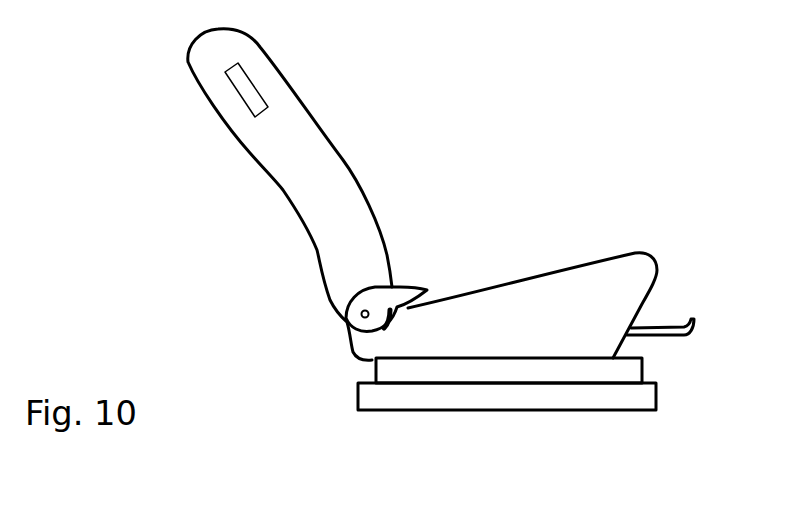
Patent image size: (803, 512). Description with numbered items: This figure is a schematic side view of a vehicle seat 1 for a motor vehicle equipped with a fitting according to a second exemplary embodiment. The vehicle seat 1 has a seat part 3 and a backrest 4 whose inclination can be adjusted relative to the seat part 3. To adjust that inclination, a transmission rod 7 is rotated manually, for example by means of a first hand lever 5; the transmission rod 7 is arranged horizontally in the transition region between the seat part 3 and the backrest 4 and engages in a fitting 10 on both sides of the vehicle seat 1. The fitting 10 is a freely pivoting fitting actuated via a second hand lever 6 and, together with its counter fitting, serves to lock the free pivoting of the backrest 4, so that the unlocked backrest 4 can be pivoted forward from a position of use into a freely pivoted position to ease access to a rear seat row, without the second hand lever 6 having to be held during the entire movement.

The vehicle seat 1 is at (410, 148).
The seat part 3 is at (523, 298).
The backrest 4 is at (280, 127).
The first hand lever 5 is at (426, 289).
The second hand lever 6 is at (245, 90).
The transmission rod 7 is at (363, 318).
The fitting 10 is at (334, 326).